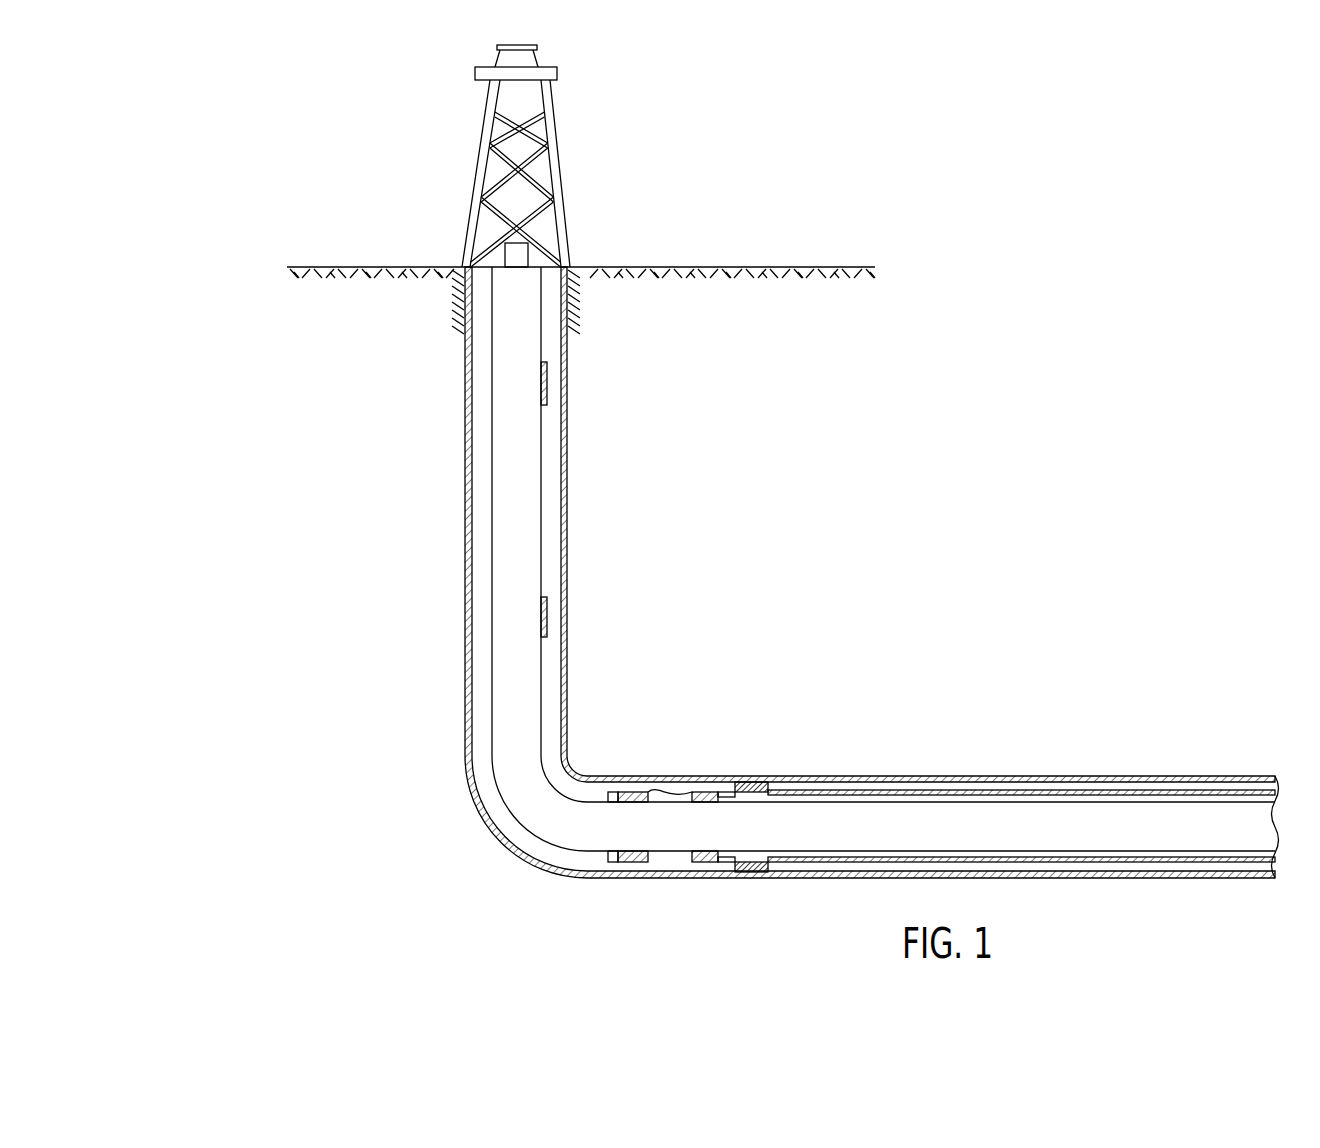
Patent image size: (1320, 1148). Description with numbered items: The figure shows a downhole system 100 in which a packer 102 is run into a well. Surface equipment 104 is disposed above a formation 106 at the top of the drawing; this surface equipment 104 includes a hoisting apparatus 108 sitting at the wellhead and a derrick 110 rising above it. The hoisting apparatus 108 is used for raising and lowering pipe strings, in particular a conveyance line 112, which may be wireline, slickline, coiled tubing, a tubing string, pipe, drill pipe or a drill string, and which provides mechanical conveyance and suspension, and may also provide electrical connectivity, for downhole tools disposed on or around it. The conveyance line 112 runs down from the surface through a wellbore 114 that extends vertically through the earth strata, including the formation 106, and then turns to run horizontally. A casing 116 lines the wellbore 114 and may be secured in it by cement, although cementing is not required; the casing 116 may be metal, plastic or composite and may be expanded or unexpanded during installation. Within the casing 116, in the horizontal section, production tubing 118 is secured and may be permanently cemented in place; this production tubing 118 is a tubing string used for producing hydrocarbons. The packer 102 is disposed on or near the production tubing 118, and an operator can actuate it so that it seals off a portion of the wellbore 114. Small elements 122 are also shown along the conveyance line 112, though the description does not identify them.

The downhole system 100 is at (376, 222).
The packer 102 is at (757, 782).
The surface equipment 104 is at (465, 266).
The formation 106 is at (790, 525).
The hoisting apparatus 108 is at (528, 255).
The derrick 110 is at (543, 142).
The conveyance line 112 is at (490, 509).
The wellbore 114 is at (458, 624).
The casing 116 is at (465, 718).
The production tubing 118 is at (927, 795).
The centralizer 122 is at (547, 377).